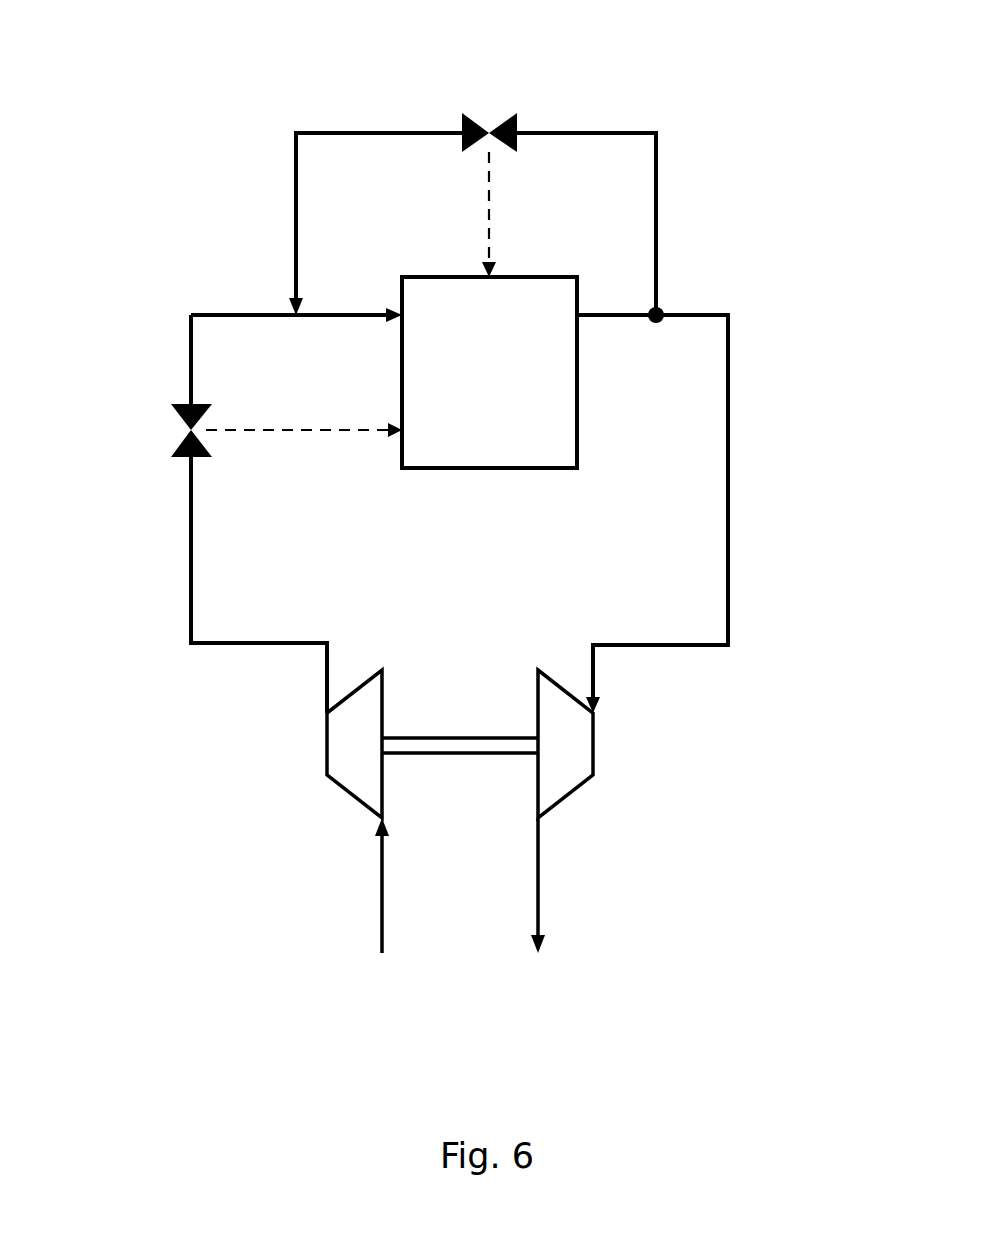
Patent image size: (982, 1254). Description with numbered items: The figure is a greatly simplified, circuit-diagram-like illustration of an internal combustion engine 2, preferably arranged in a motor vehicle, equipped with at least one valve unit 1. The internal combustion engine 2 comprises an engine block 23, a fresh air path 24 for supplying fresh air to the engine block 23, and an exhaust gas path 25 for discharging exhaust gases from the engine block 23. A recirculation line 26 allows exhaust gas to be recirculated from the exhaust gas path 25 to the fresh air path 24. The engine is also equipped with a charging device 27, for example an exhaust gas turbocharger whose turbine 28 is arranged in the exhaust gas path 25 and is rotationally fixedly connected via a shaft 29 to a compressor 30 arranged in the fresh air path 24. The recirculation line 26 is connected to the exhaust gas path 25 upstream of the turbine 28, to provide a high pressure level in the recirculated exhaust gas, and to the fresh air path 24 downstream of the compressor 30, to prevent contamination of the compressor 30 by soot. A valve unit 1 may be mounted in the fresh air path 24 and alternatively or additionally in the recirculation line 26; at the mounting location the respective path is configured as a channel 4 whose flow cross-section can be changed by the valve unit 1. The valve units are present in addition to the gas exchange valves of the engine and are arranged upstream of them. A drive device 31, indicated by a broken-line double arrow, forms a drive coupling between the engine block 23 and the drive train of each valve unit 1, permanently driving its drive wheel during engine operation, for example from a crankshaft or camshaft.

The valve unit 1 is at (479, 108).
The internal combustion engine 2 is at (192, 160).
The channel 4 is at (378, 131).
The engine block 23 is at (474, 387).
The fresh air path 24 is at (170, 568).
The exhaust gas path 25 is at (745, 472).
The recirculation line 26 is at (586, 131).
The charging device 27 is at (612, 745).
The turbine 28 is at (553, 759).
The shaft 29 is at (460, 736).
The compressor 30 is at (341, 759).
The drive device 31 is at (490, 205).